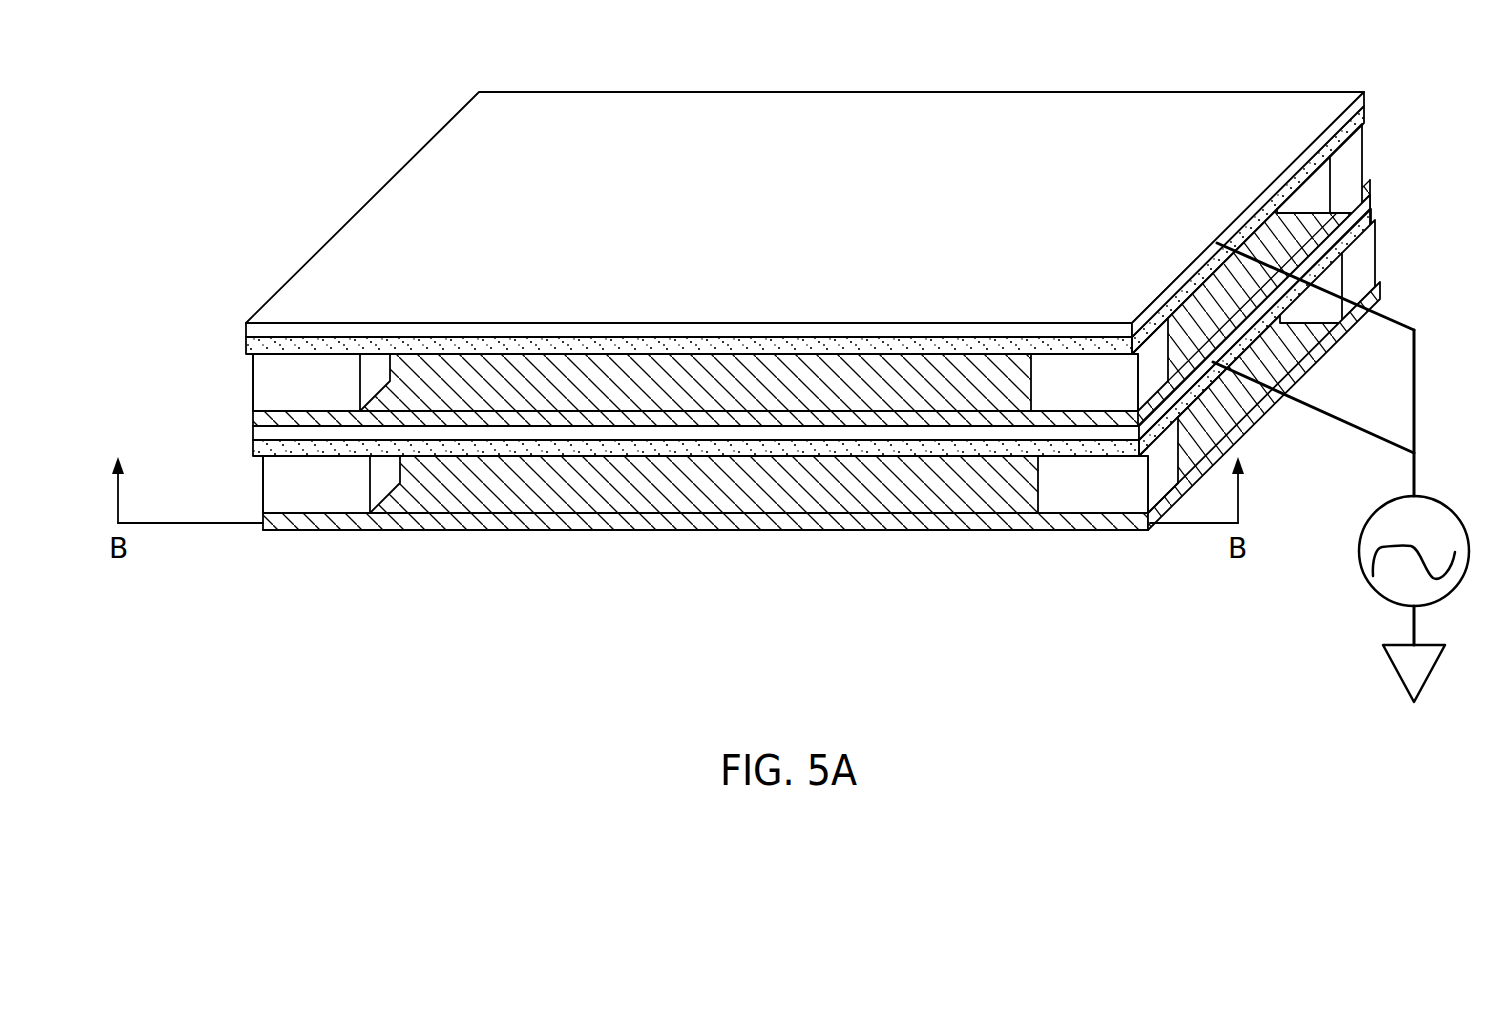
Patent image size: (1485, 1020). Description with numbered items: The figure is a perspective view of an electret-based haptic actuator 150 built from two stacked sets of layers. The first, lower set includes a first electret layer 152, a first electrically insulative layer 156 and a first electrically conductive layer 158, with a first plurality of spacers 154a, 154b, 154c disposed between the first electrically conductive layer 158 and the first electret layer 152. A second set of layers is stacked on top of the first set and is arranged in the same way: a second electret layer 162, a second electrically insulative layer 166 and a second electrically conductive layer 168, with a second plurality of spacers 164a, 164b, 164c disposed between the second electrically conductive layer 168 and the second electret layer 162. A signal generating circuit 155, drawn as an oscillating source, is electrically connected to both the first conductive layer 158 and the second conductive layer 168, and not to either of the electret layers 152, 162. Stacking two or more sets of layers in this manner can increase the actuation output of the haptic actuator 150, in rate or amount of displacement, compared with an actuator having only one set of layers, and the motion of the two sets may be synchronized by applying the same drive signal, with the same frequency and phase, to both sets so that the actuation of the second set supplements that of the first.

The haptic actuator 150 is at (146, 300).
The first electret layer 152 is at (278, 527).
The spacer 154a is at (263, 505).
The spacer 154b is at (1093, 503).
The spacer 154c is at (1367, 257).
The signal generating circuit 155 is at (1370, 548).
The first electrically insulative layer 156 is at (255, 452).
The first electrically conductive layer 158 is at (255, 435).
The second electret layer 162 is at (255, 419).
The spacer 164a is at (253, 383).
The spacer 164b is at (1080, 366).
The spacer 164c is at (1360, 162).
The second electrically insulative layer 166 is at (246, 346).
The second electrically conductive layer 168 is at (246, 330).